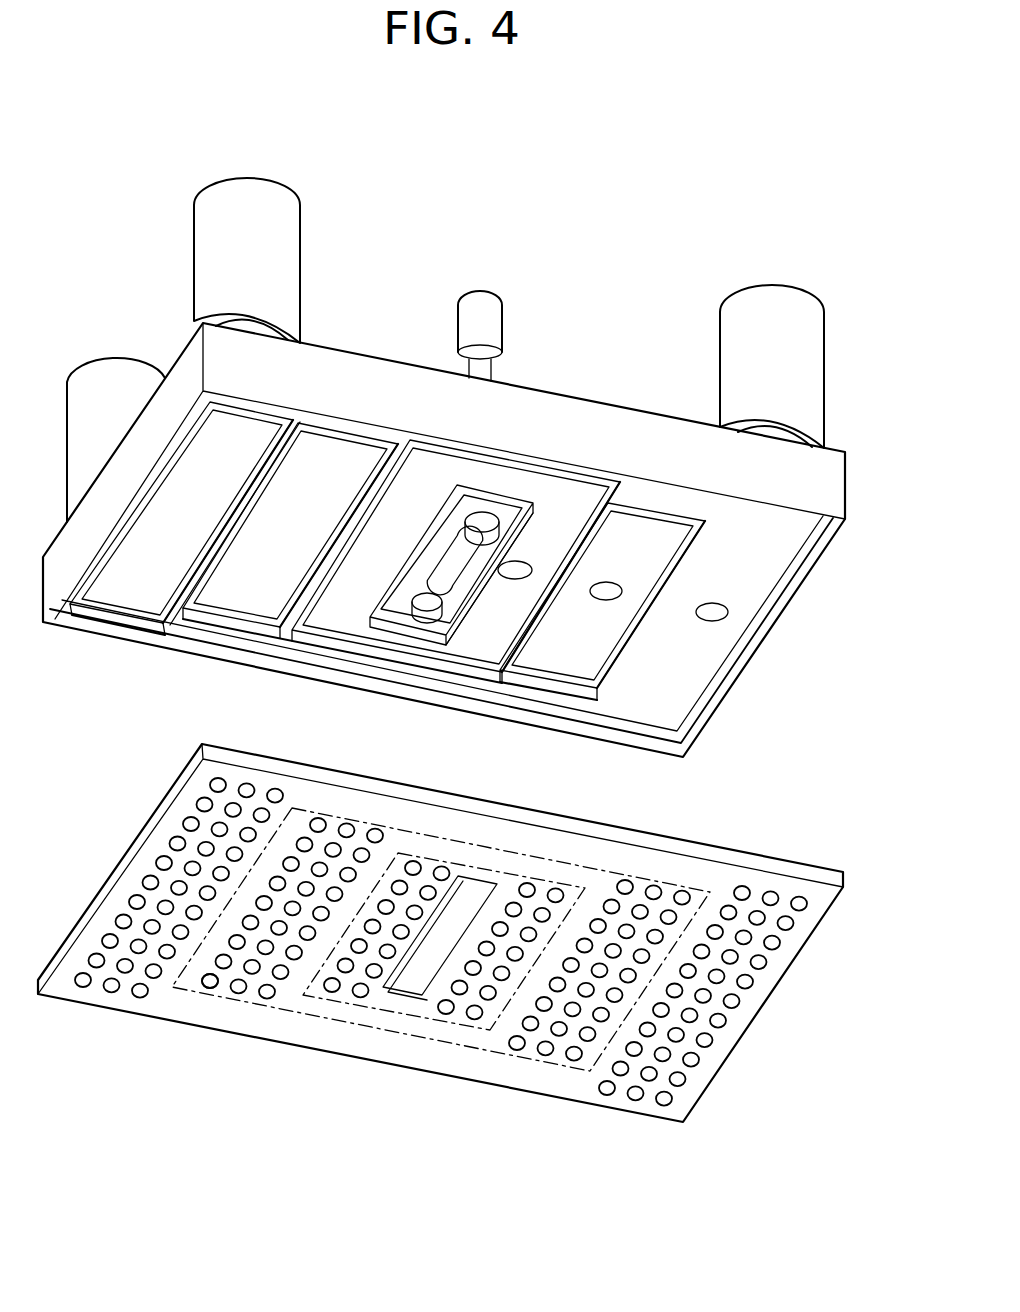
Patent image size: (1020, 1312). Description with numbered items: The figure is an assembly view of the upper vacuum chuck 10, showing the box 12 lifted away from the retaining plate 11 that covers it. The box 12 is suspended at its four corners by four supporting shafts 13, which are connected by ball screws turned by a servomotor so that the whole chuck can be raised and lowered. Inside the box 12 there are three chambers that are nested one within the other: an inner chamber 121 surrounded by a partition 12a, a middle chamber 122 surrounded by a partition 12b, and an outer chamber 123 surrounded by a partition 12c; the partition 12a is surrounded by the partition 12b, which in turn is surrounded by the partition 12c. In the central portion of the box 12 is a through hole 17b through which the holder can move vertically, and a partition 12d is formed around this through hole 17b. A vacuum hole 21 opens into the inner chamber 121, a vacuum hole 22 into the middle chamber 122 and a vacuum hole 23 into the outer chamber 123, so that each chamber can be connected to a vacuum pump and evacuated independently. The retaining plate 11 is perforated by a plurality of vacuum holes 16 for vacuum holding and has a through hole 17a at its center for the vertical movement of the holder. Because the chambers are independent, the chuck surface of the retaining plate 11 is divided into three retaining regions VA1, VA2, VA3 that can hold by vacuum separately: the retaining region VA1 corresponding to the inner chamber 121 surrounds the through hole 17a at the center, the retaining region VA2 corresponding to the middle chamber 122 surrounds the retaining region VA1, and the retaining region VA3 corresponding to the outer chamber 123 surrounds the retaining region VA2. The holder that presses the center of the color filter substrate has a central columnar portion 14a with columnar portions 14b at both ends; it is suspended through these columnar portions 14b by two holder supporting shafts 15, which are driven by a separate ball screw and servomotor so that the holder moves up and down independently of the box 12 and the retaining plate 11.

The upper vacuum chuck 10 is at (562, 167).
The retaining plate 11 is at (798, 950).
The box 12 is at (368, 375).
The partition 12a is at (358, 548).
The partition 12b is at (257, 523).
The partition 12c is at (177, 462).
The partition 12d is at (527, 527).
The supporting shaft 13 is at (245, 186).
The central columnar portion 14a is at (470, 650).
The columnar portion 14b is at (470, 545).
The holder supporting shaft 15 is at (479, 306).
The vacuum hole 16 is at (211, 989).
The through hole 17a is at (410, 968).
The through hole 17b is at (445, 585).
The vacuum hole 21 is at (530, 570).
The vacuum hole 22 is at (620, 598).
The vacuum hole 23 is at (722, 612).
The inner chamber 121 is at (458, 640).
The middle chamber 122 is at (233, 612).
The outer chamber 123 is at (110, 604).
The retaining region VA1 is at (460, 1008).
The retaining region VA2 is at (557, 1050).
The retaining region VA3 is at (655, 1092).